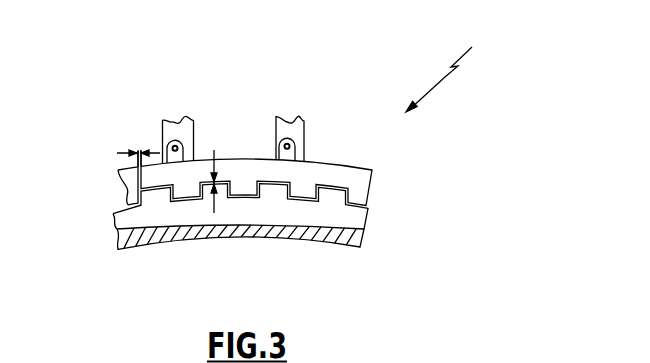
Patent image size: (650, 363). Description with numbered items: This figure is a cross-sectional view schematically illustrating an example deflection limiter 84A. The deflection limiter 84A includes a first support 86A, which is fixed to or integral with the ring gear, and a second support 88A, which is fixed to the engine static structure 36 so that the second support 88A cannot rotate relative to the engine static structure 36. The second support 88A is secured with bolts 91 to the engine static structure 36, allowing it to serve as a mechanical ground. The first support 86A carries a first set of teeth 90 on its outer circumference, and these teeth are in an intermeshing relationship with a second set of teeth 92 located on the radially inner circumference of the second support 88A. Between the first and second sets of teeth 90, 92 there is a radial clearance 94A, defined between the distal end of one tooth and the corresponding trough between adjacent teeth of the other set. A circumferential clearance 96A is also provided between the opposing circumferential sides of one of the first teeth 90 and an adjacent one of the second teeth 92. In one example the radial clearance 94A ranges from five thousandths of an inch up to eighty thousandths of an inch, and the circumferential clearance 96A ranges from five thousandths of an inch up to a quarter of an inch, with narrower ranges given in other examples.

The deflection limiter 84A is at (462, 74).
The first support 86A is at (351, 218).
The second support 88A is at (357, 183).
The first set of teeth 90 is at (273, 192).
The bolts 91 is at (177, 141).
The second set of teeth 92 is at (304, 188).
The radial clearance 94A is at (214, 150).
The circumferential clearance 96A is at (118, 152).
The engine static structure 36 is at (162, 128).